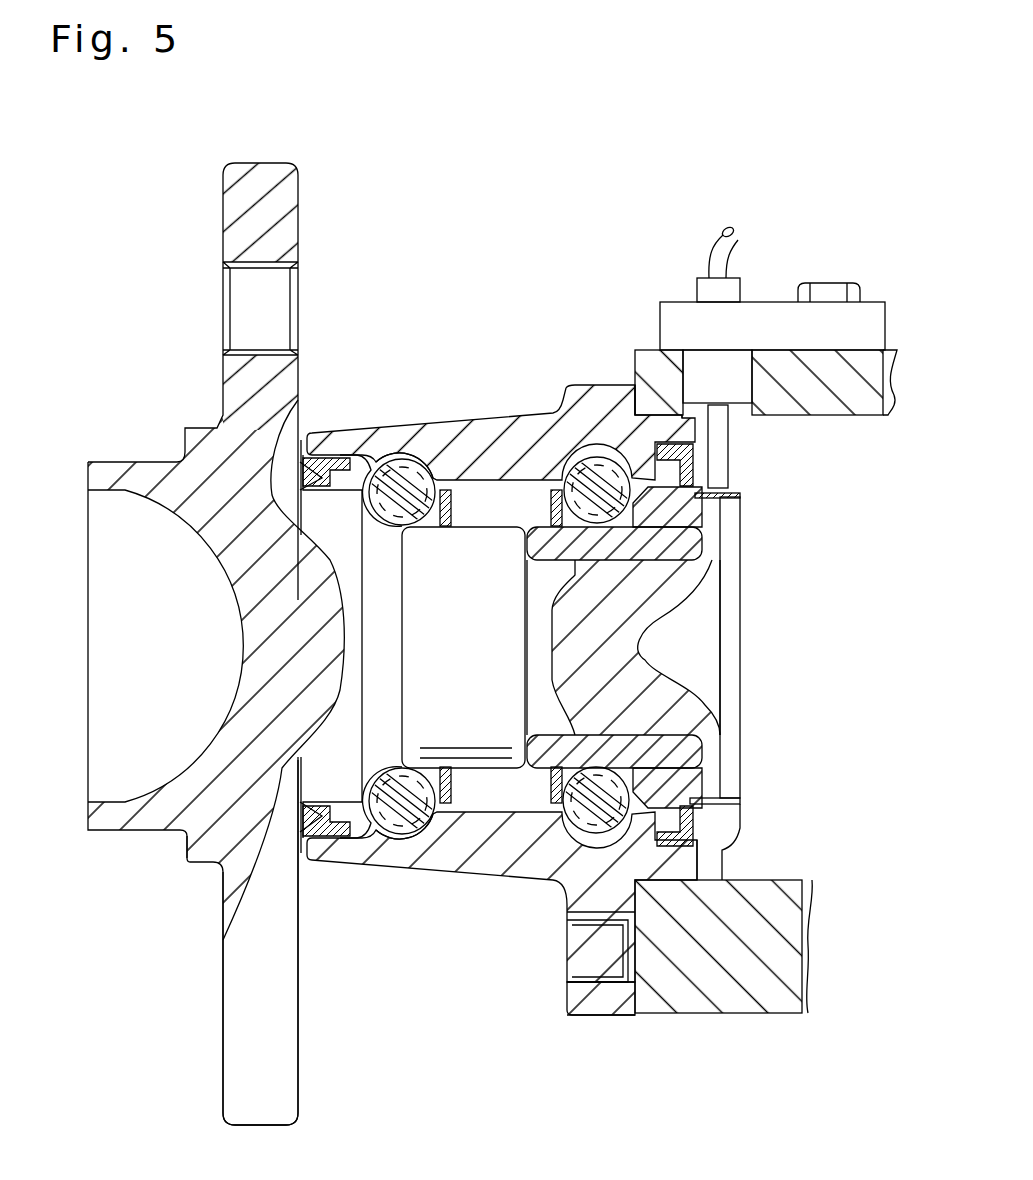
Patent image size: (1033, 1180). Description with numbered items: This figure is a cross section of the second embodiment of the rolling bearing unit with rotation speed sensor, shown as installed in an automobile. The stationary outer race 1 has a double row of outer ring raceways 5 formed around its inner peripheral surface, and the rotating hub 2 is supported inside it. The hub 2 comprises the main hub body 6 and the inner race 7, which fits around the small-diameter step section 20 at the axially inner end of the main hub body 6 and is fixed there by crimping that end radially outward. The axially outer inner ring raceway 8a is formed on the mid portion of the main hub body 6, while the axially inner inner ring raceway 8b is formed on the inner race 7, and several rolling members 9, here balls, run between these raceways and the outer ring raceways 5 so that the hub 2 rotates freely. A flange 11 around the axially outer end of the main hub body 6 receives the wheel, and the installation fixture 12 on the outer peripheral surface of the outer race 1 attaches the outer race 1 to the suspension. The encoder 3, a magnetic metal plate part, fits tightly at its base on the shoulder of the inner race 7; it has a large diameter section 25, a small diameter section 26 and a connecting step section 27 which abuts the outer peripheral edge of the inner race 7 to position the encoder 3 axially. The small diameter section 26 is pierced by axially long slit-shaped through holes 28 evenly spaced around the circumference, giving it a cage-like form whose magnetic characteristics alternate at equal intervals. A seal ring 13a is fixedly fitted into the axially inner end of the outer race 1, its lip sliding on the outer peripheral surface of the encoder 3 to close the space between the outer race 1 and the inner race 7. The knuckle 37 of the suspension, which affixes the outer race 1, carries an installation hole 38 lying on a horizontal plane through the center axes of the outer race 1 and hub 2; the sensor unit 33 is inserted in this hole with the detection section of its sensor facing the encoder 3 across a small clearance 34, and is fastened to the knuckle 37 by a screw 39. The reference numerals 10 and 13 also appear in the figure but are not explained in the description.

The outer race 1 is at (483, 440).
The hub 2 is at (472, 872).
The encoder 3 is at (740, 805).
The outer ring raceways 5 is at (399, 460).
The main hub body 6 is at (375, 712).
The inner race 7 is at (700, 780).
The inner ring raceway 8a is at (417, 777).
The inner ring raceway 8b is at (587, 770).
The rolling members 9 is at (350, 455).
The raceway 10 is at (420, 492).
The flange 11 is at (257, 1067).
The installation fixture 12 is at (598, 1007).
The flange 13 is at (322, 855).
The seal ring 13a is at (575, 990).
The small-diameter step section 20 is at (717, 748).
The large diameter section 25 is at (650, 425).
The small diameter section 26 is at (743, 498).
The step section 27 is at (703, 533).
The through holes 28 is at (737, 503).
The sensor unit 33 is at (712, 370).
The small clearance 34 is at (745, 487).
The knuckle 37 is at (790, 370).
The installation hole 38 is at (748, 377).
The screw 39 is at (830, 287).